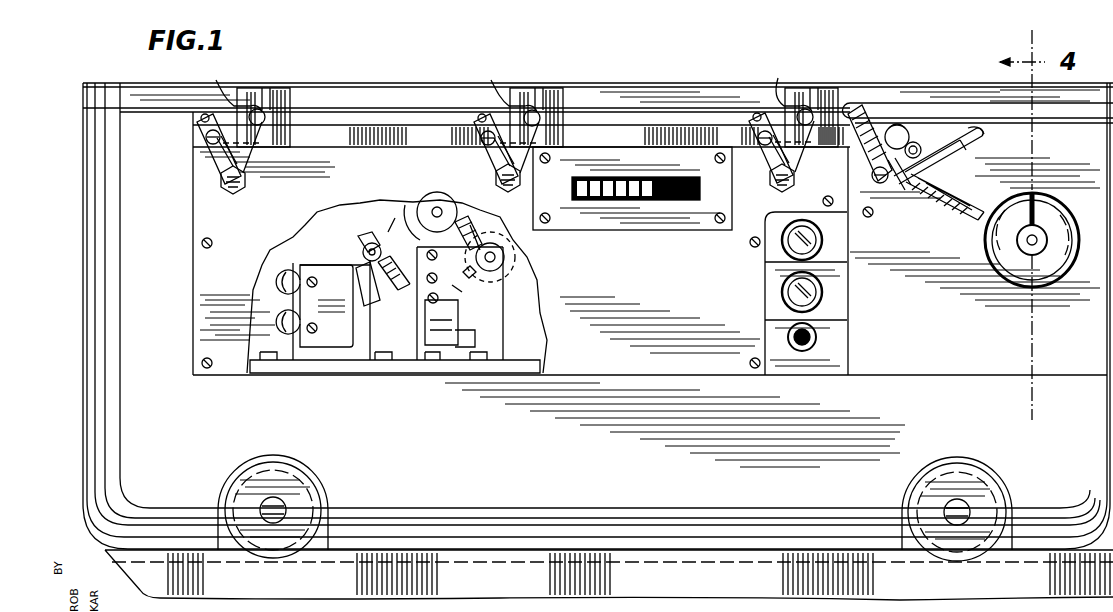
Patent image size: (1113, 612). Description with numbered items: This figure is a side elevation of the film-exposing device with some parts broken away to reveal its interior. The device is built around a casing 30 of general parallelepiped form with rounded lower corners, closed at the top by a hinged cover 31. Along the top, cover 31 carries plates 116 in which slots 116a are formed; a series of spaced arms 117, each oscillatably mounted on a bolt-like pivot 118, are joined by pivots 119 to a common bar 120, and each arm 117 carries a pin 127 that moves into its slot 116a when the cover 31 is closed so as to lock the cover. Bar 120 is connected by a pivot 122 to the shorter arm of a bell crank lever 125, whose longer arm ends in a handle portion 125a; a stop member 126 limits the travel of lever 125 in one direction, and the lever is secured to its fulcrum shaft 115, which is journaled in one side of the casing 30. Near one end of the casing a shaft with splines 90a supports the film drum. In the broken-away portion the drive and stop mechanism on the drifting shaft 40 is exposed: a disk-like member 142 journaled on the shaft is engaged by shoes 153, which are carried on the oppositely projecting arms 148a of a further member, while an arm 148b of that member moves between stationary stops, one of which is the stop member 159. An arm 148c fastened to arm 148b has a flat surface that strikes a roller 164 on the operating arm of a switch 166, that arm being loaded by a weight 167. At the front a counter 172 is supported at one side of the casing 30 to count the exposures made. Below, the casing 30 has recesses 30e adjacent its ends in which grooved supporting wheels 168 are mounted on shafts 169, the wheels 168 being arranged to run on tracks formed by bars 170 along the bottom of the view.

The casing 30 is at (150, 176).
The recesses 30e is at (325, 487).
The top cover 31 is at (700, 98).
The drifting shaft 40 is at (445, 205).
The splines 90a is at (1010, 248).
The fulcrum shaft 115 is at (897, 195).
The plates 116 is at (270, 95).
The slots 116a is at (500, 87).
The arms 117 is at (215, 162).
The bolt-like pivots 118 is at (246, 186).
The pivots 119 is at (206, 138).
The bar 120 is at (620, 140).
The pivot 122 is at (868, 128).
The bell crank lever 125 is at (930, 172).
The handle portion 125a is at (973, 130).
The stop member 126 is at (912, 143).
The pins 127 is at (266, 120).
The disk-like member 142 is at (455, 265).
The arms 148a is at (498, 252).
The arm 148b is at (452, 306).
The arm 148c is at (425, 272).
The shoes 153 is at (458, 292).
The stop member 159 is at (460, 333).
The roller 164 is at (362, 246).
The switch 166 is at (330, 270).
The weight 167 is at (415, 303).
The supporting wheels 168 is at (318, 513).
The shafts 169 is at (268, 500).
The bars 170 is at (138, 572).
The counter 172 is at (622, 205).